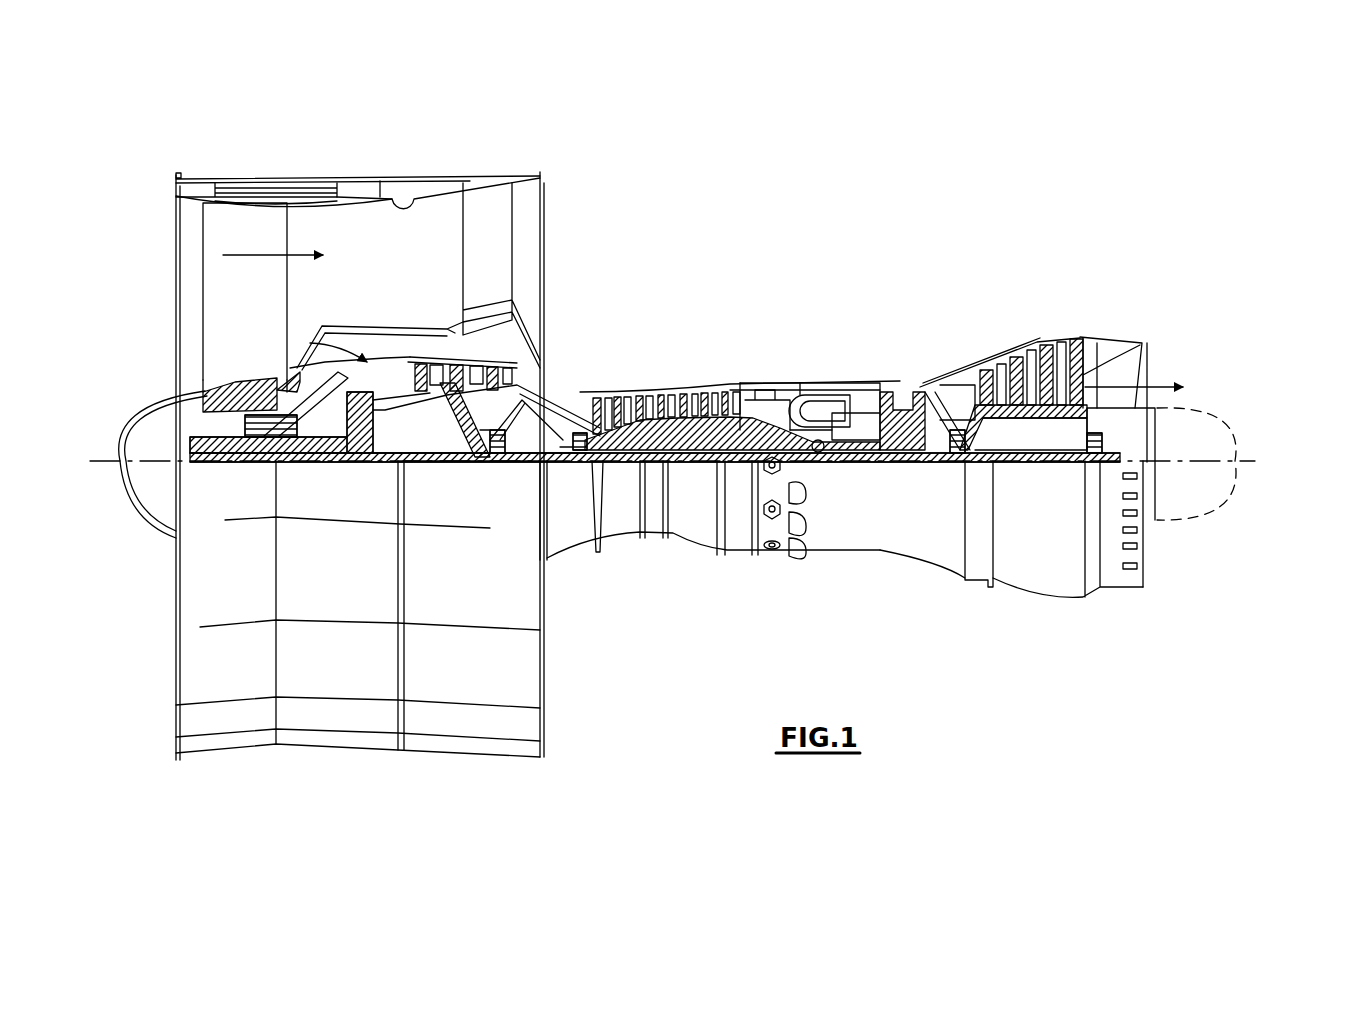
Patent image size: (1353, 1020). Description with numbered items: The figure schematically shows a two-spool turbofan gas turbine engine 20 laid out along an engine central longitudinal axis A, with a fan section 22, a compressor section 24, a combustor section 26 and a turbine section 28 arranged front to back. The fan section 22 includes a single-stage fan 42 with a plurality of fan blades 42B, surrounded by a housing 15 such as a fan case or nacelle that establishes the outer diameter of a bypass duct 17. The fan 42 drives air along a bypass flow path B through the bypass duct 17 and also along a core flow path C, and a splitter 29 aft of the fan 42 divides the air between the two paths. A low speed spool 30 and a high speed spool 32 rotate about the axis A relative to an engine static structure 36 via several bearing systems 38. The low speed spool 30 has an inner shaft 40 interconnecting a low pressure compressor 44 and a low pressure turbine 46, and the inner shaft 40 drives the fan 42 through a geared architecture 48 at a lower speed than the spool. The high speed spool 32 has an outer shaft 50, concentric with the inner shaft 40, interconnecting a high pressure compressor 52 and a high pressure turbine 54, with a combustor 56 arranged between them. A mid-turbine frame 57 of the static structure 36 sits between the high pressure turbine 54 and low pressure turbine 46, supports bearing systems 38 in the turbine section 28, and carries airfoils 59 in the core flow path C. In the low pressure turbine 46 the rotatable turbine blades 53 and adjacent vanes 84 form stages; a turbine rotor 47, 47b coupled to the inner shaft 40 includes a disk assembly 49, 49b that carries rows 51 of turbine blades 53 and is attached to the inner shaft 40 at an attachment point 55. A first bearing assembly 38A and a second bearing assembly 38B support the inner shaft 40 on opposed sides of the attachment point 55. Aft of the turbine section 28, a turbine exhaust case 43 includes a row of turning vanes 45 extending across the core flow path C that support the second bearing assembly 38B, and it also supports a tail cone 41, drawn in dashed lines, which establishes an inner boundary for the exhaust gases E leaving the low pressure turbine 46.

The gas turbine engine 20 is at (815, 233).
The fan section 22 is at (288, 166).
The housing 15 is at (353, 182).
The bypass duct 17 is at (404, 201).
The compressor section 24 is at (588, 361).
The combustor section 26 is at (812, 357).
The turbine section 28 is at (987, 305).
The splitter 29 is at (342, 327).
The low speed spool 30 is at (697, 470).
The high speed spool 32 is at (736, 396).
The engine static structure 36 is at (737, 553).
The bearing systems 38 is at (497, 447).
The first bearing assembly 38A is at (958, 436).
The second bearing assembly 38B is at (1102, 437).
The inner shaft 40 is at (558, 467).
The tail cone 41 is at (1205, 510).
The fan 42 is at (259, 296).
The fan blades 42B is at (278, 312).
The turbine exhaust case 43 is at (1118, 592).
The low pressure compressor 44 is at (455, 376).
The turning vanes 45 is at (1132, 368).
The low pressure turbine 46 is at (1031, 368).
The turbine rotor 47 is at (417, 364).
The turbine rotor 47b is at (1060, 478).
The geared architecture 48 is at (367, 447).
The disk assembly 49 is at (443, 362).
The disk assembly 49b is at (998, 452).
The outer shaft 50 is at (818, 453).
The rows of turbine blades 51 is at (963, 383).
The high pressure compressor 52 is at (676, 393).
The turbine blades 53 is at (937, 362).
The high pressure turbine 54 is at (886, 398).
The attachment point 55 is at (975, 470).
The combustor 56 is at (812, 406).
The mid-turbine frame 57 is at (952, 415).
The airfoils 59 is at (985, 441).
The vanes 84 is at (1063, 350).
The engine central longitudinal axis A is at (1237, 461).
The bypass flow path B is at (263, 255).
The core flow path C is at (310, 343).
The exhaust gases E is at (1160, 387).